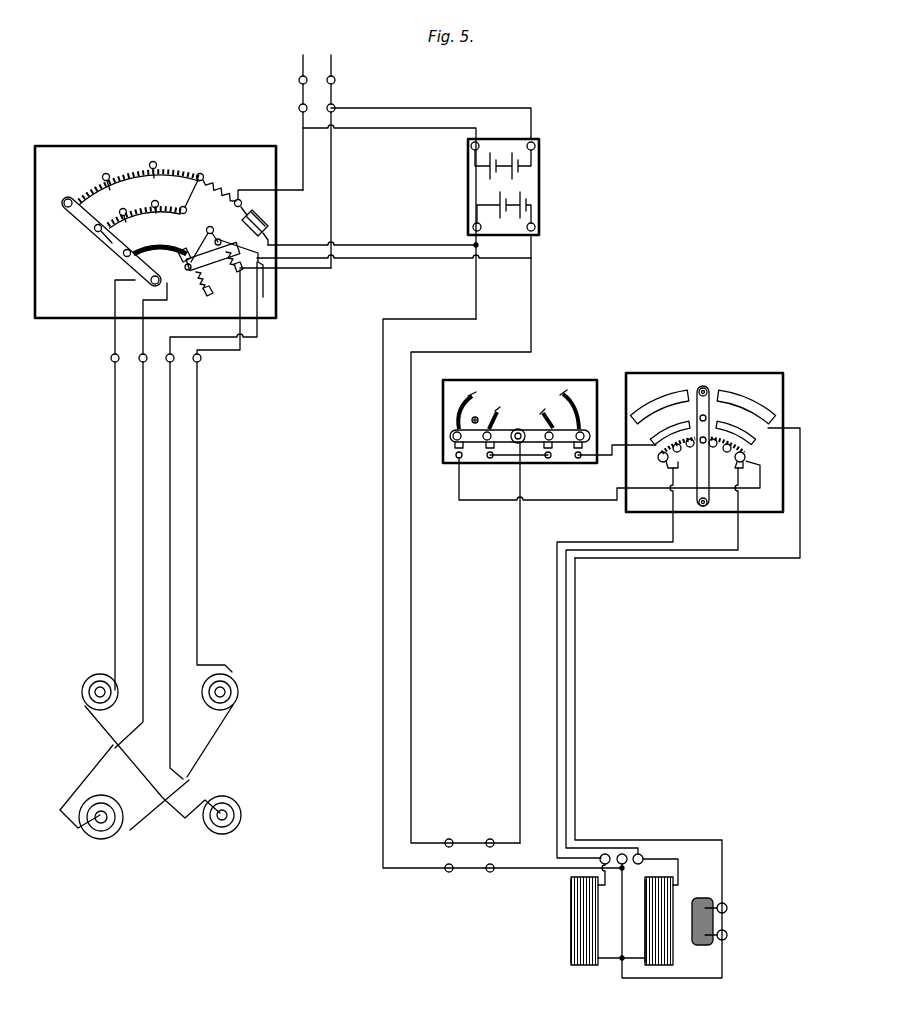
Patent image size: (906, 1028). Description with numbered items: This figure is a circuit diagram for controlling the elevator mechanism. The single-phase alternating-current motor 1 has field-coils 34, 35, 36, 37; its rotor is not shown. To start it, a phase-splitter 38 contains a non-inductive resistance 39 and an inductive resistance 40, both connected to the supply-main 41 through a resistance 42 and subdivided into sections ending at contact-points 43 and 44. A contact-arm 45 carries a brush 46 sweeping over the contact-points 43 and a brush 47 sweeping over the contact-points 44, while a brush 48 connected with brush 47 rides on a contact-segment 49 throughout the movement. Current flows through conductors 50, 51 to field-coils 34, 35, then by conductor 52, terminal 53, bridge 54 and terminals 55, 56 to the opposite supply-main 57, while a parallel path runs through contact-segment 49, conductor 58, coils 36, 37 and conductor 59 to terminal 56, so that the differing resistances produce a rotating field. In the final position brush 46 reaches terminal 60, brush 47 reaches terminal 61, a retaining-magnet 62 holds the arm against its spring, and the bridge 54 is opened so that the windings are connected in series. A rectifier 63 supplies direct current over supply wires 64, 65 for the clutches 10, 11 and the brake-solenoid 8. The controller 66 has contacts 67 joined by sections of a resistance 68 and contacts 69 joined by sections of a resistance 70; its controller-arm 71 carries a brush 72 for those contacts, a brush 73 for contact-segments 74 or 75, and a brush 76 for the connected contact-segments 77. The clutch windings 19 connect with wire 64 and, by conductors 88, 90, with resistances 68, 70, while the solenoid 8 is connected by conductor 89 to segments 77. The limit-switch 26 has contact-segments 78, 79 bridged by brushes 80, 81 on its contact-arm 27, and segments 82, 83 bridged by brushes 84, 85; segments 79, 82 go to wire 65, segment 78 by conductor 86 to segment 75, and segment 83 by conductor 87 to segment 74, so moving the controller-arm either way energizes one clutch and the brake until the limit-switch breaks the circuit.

The armature 1 is at (252, 760).
The brake solenoid 8 is at (714, 921).
The clutch 10 is at (558, 989).
The clutch 11 is at (708, 973).
The winding 19 is at (578, 934).
The switch casing 26 is at (448, 387).
The switch lever 27 is at (500, 433).
The field-coil 34 is at (89, 684).
The field-coil 35 is at (226, 819).
The field-coil 36 is at (90, 829).
The field-coil 37 is at (240, 690).
The phase-splitter 38 is at (40, 238).
The resistance 39 is at (131, 182).
The resistance 40 is at (128, 207).
The supply-main 41 is at (303, 64).
The resistance 42 is at (222, 190).
The contact-points 43 is at (157, 165).
The contact-points 44 is at (157, 202).
The contact-arm 45 is at (137, 264).
The brush 46 is at (68, 199).
The brush 47 is at (95, 231).
The brush 48 is at (124, 256).
The contact-segment 49 is at (170, 250).
The conductor 50 is at (105, 240).
The conductor 51 is at (116, 438).
The conductor 52 is at (172, 491).
The terminal 53 is at (190, 264).
The bridge 54 is at (212, 257).
The terminal 55 is at (219, 239).
The terminal 56 is at (237, 272).
The supply-main 57 is at (334, 62).
The conductor 58 is at (146, 441).
The conductor 59 is at (200, 569).
The terminal 60 is at (240, 200).
The terminal 61 is at (210, 226).
The retaining-magnet 62 is at (265, 212).
The rectifier 63 is at (540, 160).
The direct-current-supply wire 64 is at (383, 590).
The direct-current-supply wire 65 is at (411, 600).
The controller 66 is at (690, 375).
The contacts 67 is at (662, 463).
The resistance 68 is at (673, 451).
The contacts 69 is at (727, 452).
The resistance 70 is at (745, 460).
The controller-arm 71 is at (702, 468).
The brush 72 is at (702, 444).
The brush 73 is at (699, 415).
The contact-segment 74 is at (656, 440).
The contact-segment 75 is at (766, 421).
The brush 76 is at (706, 392).
The contact-segments 77 is at (641, 418).
The contact-segment 78 is at (471, 395).
The contact-segment 79 is at (496, 410).
The brush 80 is at (452, 436).
The brush 81 is at (486, 442).
The contact-segment 82 is at (543, 411).
The contact-segment 83 is at (565, 392).
The brush 84 is at (553, 433).
The brush 85 is at (584, 437).
The conductor 86 is at (522, 520).
The conductor 87 is at (616, 450).
The conductor 88 is at (557, 686).
The conductor 89 is at (576, 648).
The conductor 90 is at (567, 735).